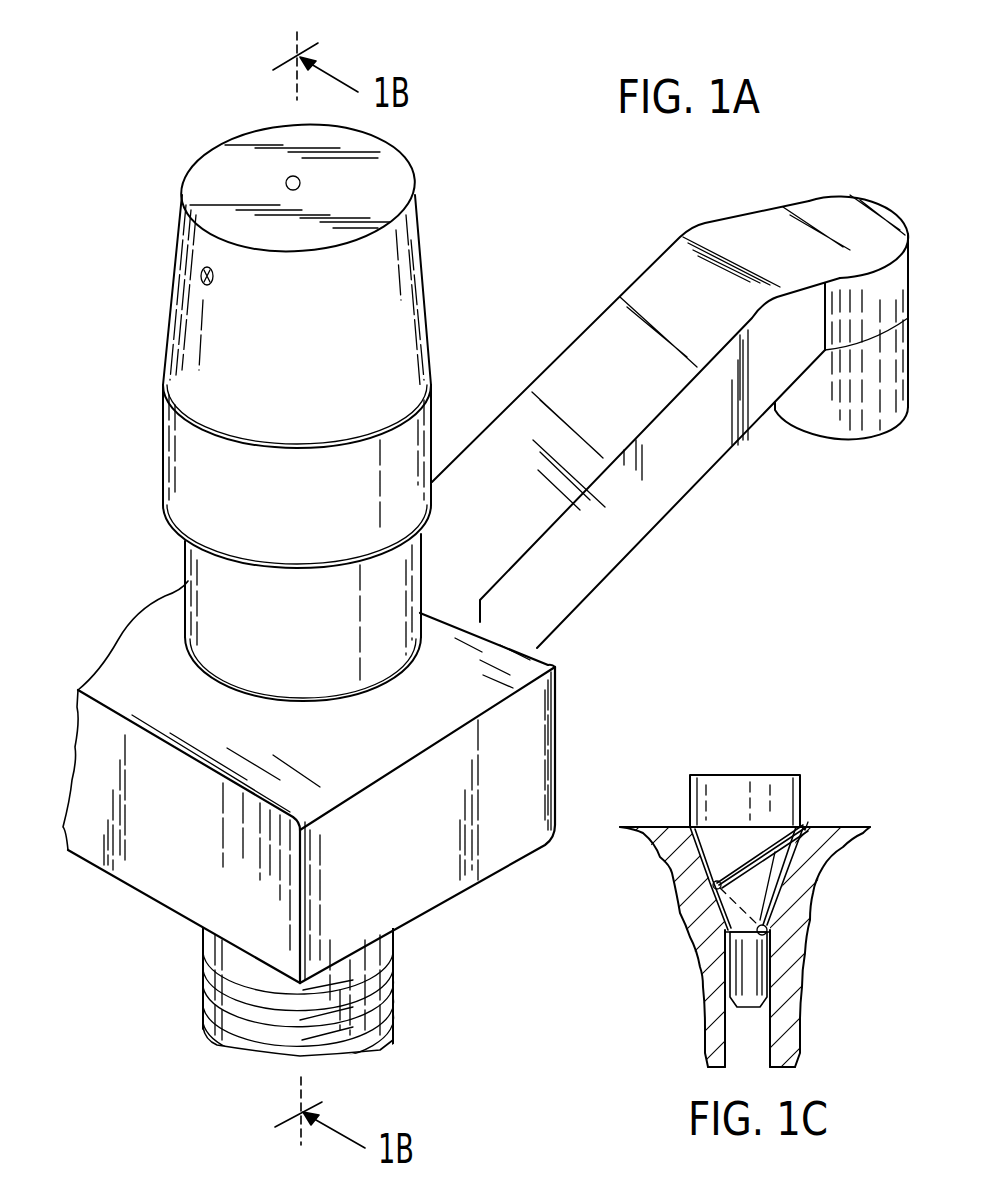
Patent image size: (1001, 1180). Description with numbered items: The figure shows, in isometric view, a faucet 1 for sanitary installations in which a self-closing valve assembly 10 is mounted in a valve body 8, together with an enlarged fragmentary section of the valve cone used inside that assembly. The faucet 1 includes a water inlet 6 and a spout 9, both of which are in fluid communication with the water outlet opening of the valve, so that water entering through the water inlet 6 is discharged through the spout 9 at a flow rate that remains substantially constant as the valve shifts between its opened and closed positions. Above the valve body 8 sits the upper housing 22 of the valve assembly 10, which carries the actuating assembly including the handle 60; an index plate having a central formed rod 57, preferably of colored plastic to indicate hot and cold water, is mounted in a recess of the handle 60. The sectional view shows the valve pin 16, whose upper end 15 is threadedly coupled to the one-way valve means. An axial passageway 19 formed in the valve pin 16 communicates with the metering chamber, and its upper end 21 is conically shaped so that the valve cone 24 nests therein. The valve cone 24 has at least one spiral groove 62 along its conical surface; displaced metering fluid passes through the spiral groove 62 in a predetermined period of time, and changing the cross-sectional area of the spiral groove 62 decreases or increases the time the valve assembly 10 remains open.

In FIG. 1A, the faucet 1 is at (547, 244).
In FIG. 1A, the water inlet 6 is at (370, 1047).
In FIG. 1A, the valve body 8 is at (169, 885).
In FIG. 1A, the spout 9 is at (662, 277).
In FIG. 1A, the self-closing valve assembly 10 is at (157, 310).
In FIG. 1A, the upper housing 22 is at (205, 572).
In FIG. 1A, the central formed rod 57 is at (290, 178).
In FIG. 1A, the handle 60 is at (410, 276).
In FIG. 1C, the upper end of valve pin 15 is at (685, 895).
In FIG. 1C, the valve pin 16 is at (713, 1015).
In FIG. 1C, the axial passageway 19 is at (755, 1033).
In FIG. 1C, the upper end of axial passageway 21 is at (788, 882).
In FIG. 1C, the valve cone 24 is at (728, 783).
In FIG. 1C, the spiral groove 62 is at (797, 827).